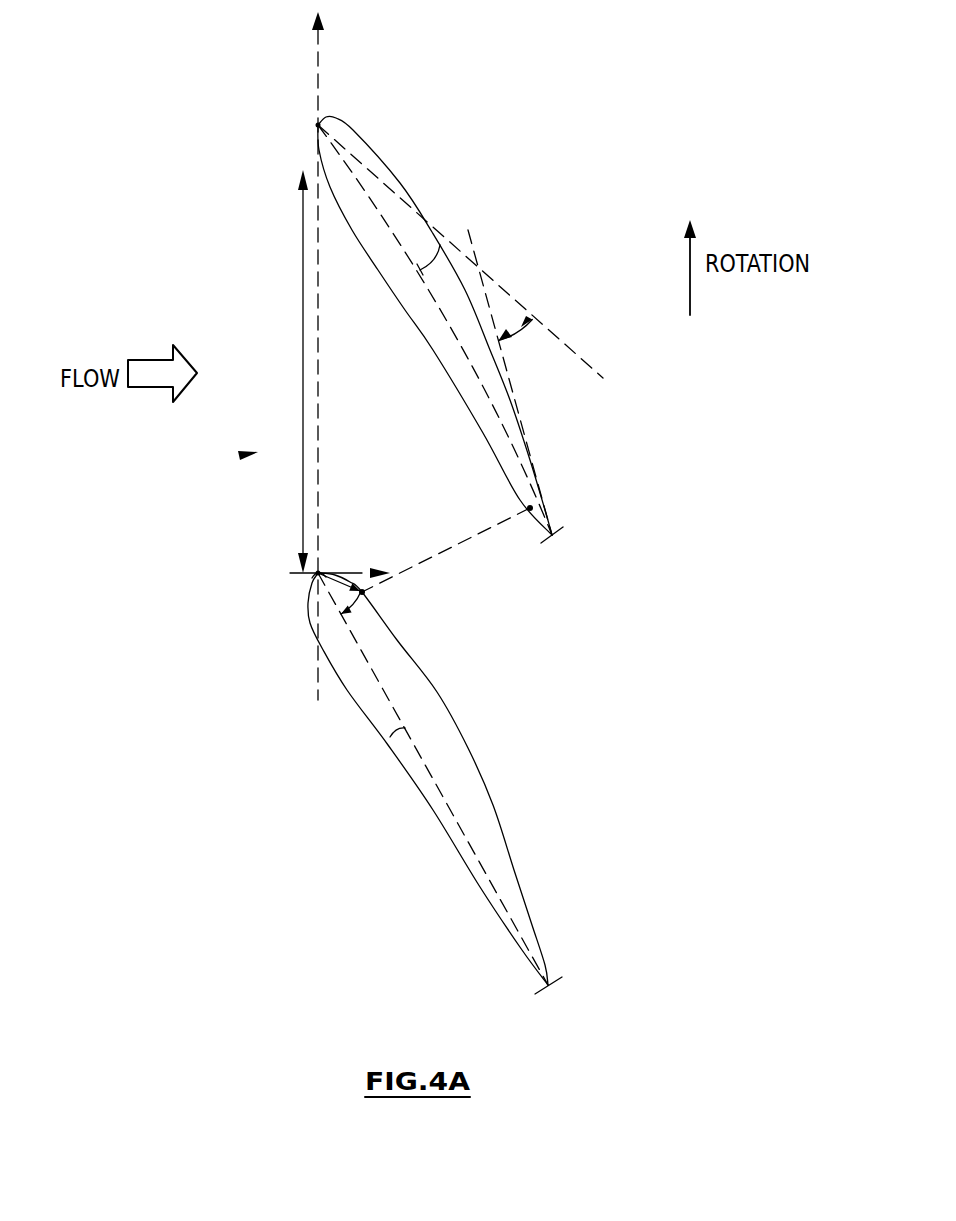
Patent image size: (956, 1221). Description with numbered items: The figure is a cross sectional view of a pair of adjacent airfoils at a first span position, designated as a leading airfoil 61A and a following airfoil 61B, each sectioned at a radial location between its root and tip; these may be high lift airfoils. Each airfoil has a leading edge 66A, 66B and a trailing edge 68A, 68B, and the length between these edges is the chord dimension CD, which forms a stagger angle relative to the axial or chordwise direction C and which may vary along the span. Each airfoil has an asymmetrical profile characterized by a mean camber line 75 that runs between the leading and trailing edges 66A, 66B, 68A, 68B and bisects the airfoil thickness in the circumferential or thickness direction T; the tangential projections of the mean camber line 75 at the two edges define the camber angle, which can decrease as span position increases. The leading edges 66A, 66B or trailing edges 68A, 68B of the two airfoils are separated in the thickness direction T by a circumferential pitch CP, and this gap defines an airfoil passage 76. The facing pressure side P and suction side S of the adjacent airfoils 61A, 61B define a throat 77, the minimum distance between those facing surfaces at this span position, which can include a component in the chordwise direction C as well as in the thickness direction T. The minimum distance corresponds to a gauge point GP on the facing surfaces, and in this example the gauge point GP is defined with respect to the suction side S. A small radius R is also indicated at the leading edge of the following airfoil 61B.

The leading airfoil 61A is at (400, 110).
The following airfoil 61B is at (258, 712).
The leading edge 66A is at (318, 125).
The leading edge 66B is at (318, 573).
The trailing edge 68A is at (552, 535).
The trailing edge 68B is at (548, 985).
The mean camber line 75 is at (440, 245).
The airfoil passage 76 is at (240, 456).
The throat 77 is at (470, 540).
The circumferential or thickness direction T is at (317, 52).
The circumferential pitch CP is at (303, 265).
The suction side S is at (400, 183).
The pressure side P is at (378, 270).
The chordwise direction C is at (357, 570).
The gauge point GP is at (363, 593).
The leading edge radius R is at (313, 577).
The chord dimension CD is at (390, 737).